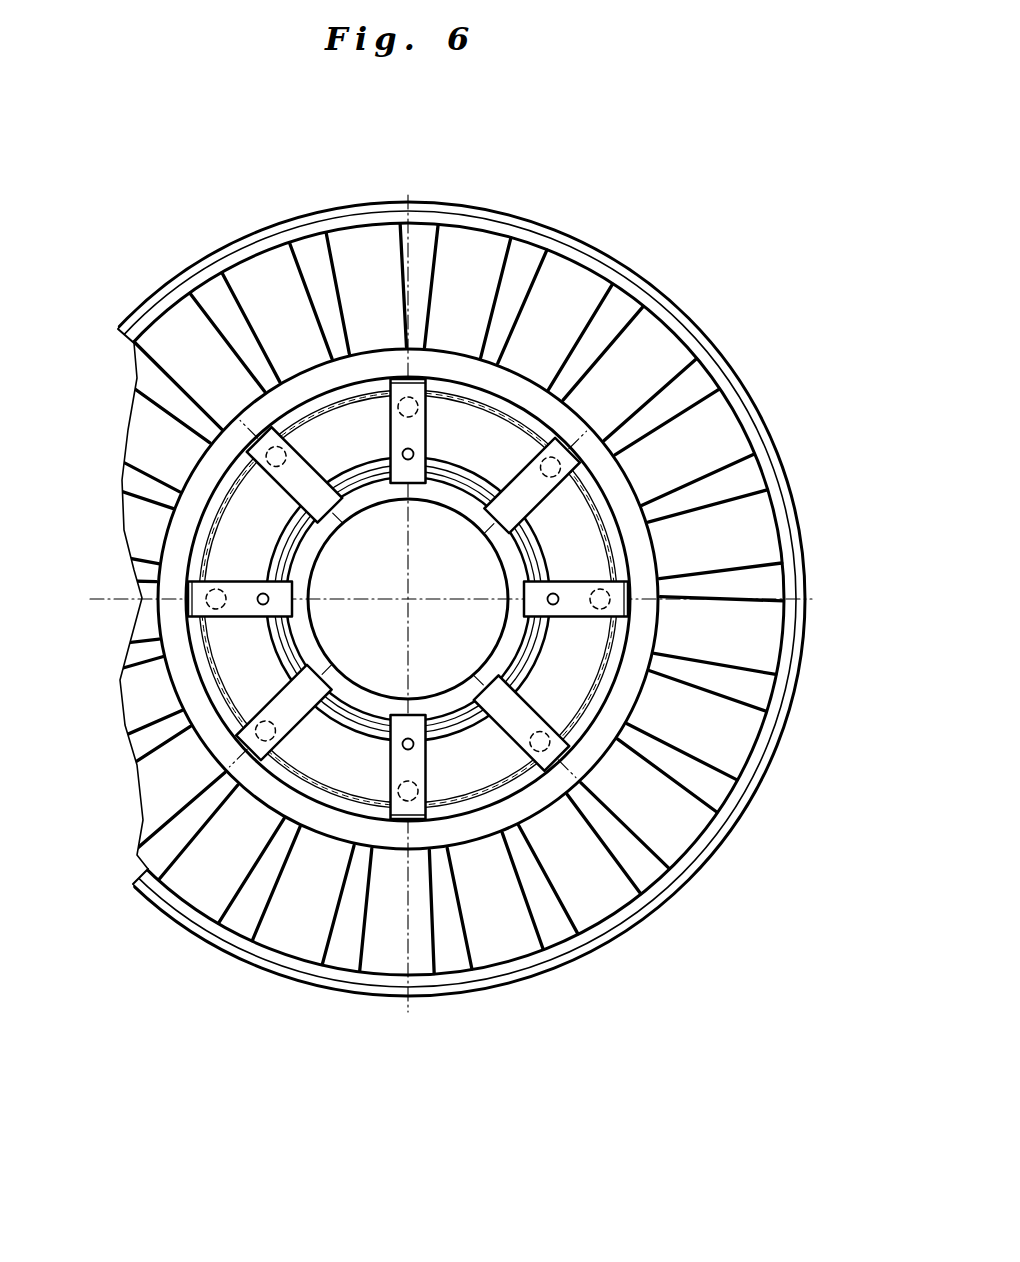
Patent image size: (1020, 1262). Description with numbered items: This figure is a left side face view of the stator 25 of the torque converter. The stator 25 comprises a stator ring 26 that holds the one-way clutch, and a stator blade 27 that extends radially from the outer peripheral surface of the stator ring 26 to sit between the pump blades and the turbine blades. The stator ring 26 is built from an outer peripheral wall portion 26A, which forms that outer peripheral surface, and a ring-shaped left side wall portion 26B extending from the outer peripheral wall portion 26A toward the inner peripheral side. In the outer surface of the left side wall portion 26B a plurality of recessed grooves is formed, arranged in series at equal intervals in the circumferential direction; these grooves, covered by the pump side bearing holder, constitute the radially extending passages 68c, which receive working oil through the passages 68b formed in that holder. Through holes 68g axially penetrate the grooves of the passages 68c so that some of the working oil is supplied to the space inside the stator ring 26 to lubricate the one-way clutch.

The stator 25 is at (514, 204).
The stator ring 26 is at (535, 815).
The outer peripheral wall portion 26A is at (620, 480).
The left side wall portion 26B is at (593, 517).
The stator blade 27 is at (400, 294).
The passage 68b is at (165, 335).
The passage 68c is at (457, 378).
The through hole 68g is at (320, 262).